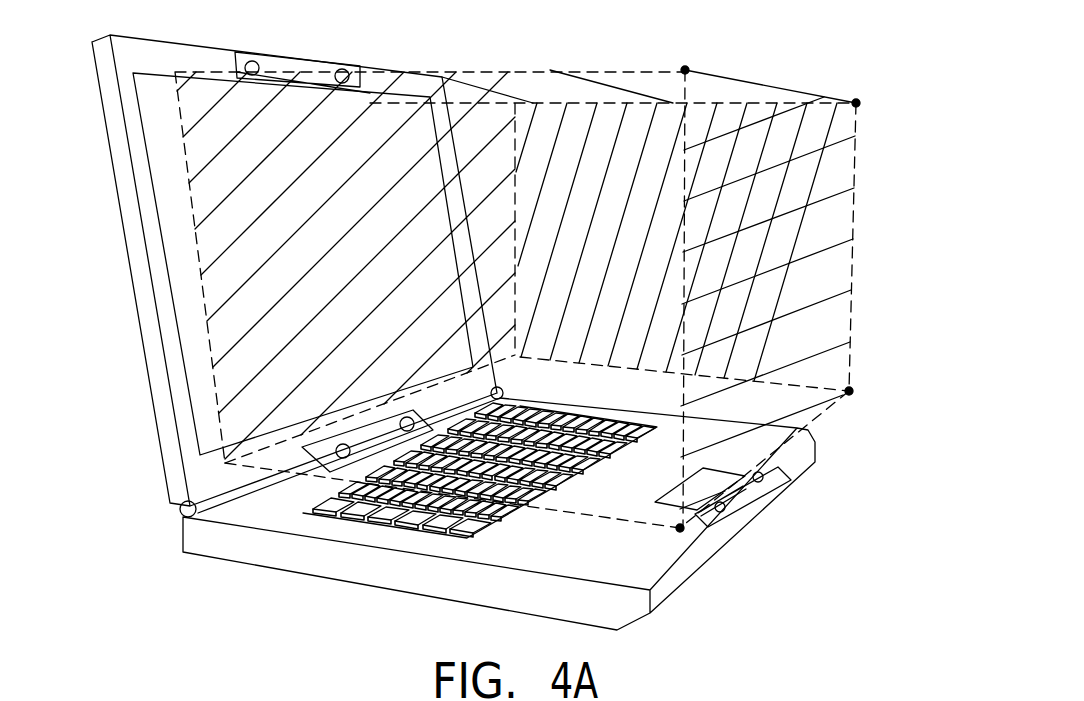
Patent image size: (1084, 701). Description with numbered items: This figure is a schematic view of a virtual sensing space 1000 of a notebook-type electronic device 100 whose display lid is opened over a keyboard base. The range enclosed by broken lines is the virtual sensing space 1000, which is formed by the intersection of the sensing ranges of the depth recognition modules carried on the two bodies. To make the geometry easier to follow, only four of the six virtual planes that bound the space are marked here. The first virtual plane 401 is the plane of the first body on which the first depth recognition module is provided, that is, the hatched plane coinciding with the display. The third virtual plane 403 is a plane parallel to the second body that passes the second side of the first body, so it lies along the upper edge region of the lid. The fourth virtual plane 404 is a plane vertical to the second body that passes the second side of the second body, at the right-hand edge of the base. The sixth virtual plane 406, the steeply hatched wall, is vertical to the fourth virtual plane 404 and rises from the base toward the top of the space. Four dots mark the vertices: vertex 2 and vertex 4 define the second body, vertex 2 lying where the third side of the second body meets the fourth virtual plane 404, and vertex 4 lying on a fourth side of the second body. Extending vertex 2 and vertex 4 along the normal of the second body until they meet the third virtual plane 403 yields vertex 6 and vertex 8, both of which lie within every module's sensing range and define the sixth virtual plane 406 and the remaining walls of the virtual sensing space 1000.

The notebook computer 100 is at (468, 341).
The first virtual plane 401 is at (220, 275).
The third virtual plane 403 is at (530, 90).
The fourth virtual plane 404 is at (765, 410).
The sixth virtual plane 406 is at (642, 173).
The virtual sensing space 1000 is at (802, 92).
The vertex 2 is at (680, 530).
The vertex 4 is at (849, 393).
The vertex 6 is at (685, 70).
The vertex 8 is at (856, 103).